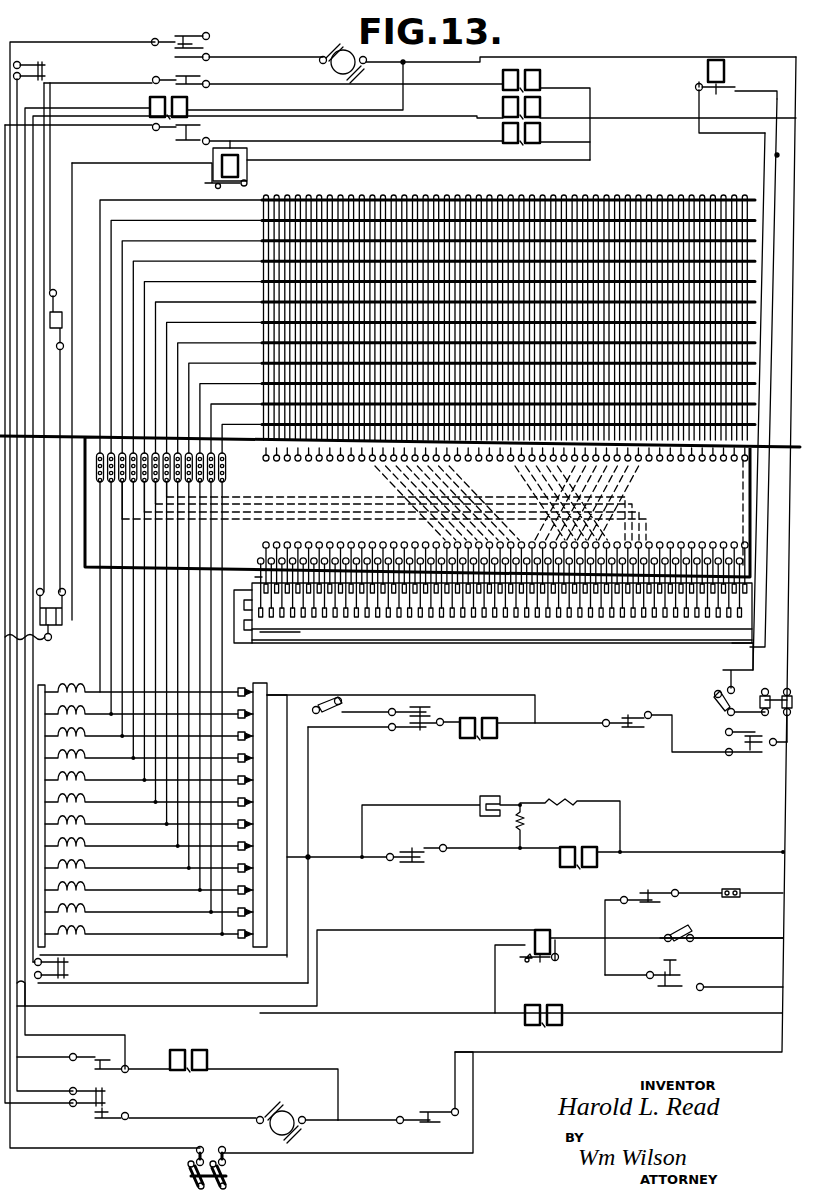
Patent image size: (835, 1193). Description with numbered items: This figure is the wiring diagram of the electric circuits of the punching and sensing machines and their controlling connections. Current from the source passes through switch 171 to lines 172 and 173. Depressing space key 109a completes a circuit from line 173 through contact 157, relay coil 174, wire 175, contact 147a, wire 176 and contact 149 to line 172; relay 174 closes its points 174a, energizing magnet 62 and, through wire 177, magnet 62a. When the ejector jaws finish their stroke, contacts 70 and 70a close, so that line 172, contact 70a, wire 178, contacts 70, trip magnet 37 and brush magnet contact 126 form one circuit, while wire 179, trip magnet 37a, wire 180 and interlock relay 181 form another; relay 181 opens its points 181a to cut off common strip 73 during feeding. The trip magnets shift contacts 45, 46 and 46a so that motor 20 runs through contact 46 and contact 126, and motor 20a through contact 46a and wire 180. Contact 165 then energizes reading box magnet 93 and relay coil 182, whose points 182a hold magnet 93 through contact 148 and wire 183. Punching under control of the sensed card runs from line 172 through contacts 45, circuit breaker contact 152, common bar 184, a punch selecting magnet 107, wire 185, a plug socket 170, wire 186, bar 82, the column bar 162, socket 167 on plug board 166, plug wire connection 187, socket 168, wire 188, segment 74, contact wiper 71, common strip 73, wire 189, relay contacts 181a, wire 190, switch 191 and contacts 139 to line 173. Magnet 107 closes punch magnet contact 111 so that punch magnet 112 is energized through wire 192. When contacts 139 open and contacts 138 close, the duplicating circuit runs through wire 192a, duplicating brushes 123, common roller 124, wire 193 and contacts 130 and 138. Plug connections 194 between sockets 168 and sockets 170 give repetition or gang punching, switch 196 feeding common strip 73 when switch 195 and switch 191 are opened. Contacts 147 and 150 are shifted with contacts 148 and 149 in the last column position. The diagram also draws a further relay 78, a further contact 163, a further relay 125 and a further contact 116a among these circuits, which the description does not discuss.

The line 172 is at (10, 52).
The contact 46a is at (190, 44).
The motor 20a is at (345, 58).
The wire 180 is at (474, 62).
The relay 78 is at (542, 78).
The interlock relay 181 is at (722, 72).
The relay points 181a is at (738, 96).
The contacts 70a is at (48, 70).
The switch 163 is at (190, 83).
The magnet 62a is at (542, 106).
The wire 189 is at (695, 116).
The wire 179 is at (106, 109).
The trip magnet 37a is at (190, 104).
The reading box magnet 93 is at (542, 132).
The contact 165 is at (190, 136).
The wire 177 is at (372, 118).
The wire 190 is at (777, 155).
The relay coil 182 is at (240, 166).
The relay points 182a is at (205, 182).
The wire 183 is at (72, 186).
The line 173 is at (796, 181).
The contacts 147a is at (56, 298).
The bar 82 is at (262, 281).
The bars 162 is at (262, 322).
The wire 186 is at (125, 348).
The wire 175 is at (60, 398).
The wire 176 is at (40, 428).
The plug sockets 170 is at (230, 473).
The plug sockets 167 is at (330, 462).
The plug connection 194 is at (265, 510).
The plug wire connection 187 is at (398, 492).
The plug board 166 is at (400, 506).
The wire 188 is at (262, 582).
The plug sockets 168 is at (340, 548).
The contacts 148 is at (52, 626).
The contacts 149 is at (50, 642).
The wire 185 is at (118, 668).
The contact wiper 71 is at (236, 632).
The segments 74 is at (318, 620).
The common strip 73 is at (383, 640).
The wire 192a is at (232, 720).
The wire 193 is at (416, 700).
The contacts 150 is at (426, 712).
The contacts 147 is at (432, 722).
The relay 125 is at (503, 736).
The contacts 130 is at (640, 722).
The switch 191 is at (766, 688).
The switch 196 is at (716, 696).
The contacts 139 is at (740, 742).
The switch 195 is at (784, 712).
The contacts 138 is at (764, 748).
The duplicating brushes 123 is at (256, 782).
The common roller 124 is at (290, 826).
The punch selecting magnets 107 is at (82, 870).
The punch magnet contact 111 is at (428, 858).
The punch magnet 112 is at (556, 860).
The common bar 184 is at (40, 920).
The switch 116a is at (655, 900).
The relay coil 174 is at (548, 940).
The relay points 174a is at (518, 958).
The space key 109a is at (678, 963).
The contact 157 is at (690, 984).
The circuit breaker contact 152 is at (70, 970).
The wire 192 is at (22, 992).
The magnet 62 is at (562, 1032).
The contacts 70 is at (112, 1064).
The trip magnet 37 is at (212, 1062).
The wire 178 is at (27, 1052).
The contacts 45 is at (108, 1100).
The contact 46 is at (108, 1118).
The motor 20 is at (288, 1118).
The brush magnet contact 126 is at (438, 1118).
The switch 171 is at (224, 1170).